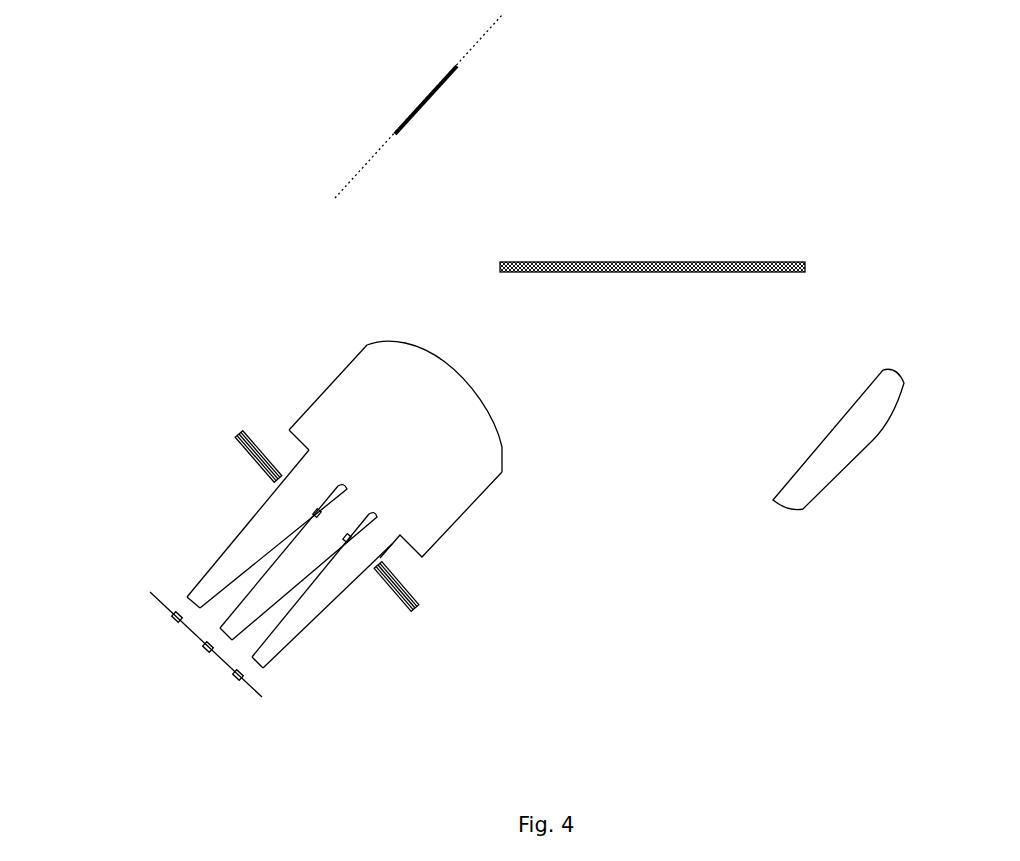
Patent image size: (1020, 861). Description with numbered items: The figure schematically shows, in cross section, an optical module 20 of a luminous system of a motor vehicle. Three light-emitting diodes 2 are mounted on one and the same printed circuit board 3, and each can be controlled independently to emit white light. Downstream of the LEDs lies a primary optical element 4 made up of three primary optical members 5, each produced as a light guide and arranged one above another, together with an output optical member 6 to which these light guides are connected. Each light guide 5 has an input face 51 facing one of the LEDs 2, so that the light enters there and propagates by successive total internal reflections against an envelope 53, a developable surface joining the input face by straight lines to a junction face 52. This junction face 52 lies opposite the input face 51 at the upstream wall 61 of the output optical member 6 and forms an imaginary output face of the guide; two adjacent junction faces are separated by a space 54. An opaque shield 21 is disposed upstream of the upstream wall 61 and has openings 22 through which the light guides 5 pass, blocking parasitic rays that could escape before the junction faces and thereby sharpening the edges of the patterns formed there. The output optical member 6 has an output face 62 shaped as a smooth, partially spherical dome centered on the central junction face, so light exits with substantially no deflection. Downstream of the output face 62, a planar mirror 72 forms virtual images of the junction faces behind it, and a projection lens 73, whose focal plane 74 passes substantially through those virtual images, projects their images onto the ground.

The light-emitting diode 2 is at (236, 676).
The printed circuit board 3 is at (157, 600).
The primary optical element 4 is at (231, 358).
The primary optical member 5 is at (328, 560).
The output optical member 6 is at (382, 407).
The optical module 20 is at (573, 632).
The opaque shield 21 is at (238, 433).
The opening 22 is at (393, 568).
The input face 51 is at (202, 609).
The junction face 52 is at (328, 472).
The envelope 53 is at (291, 603).
The space 54 is at (348, 484).
The upstream wall 61 is at (289, 429).
The output face 62 is at (397, 342).
The planar mirror 72 is at (640, 262).
The projection lens 73 is at (884, 370).
The focal plane 74 is at (368, 161).